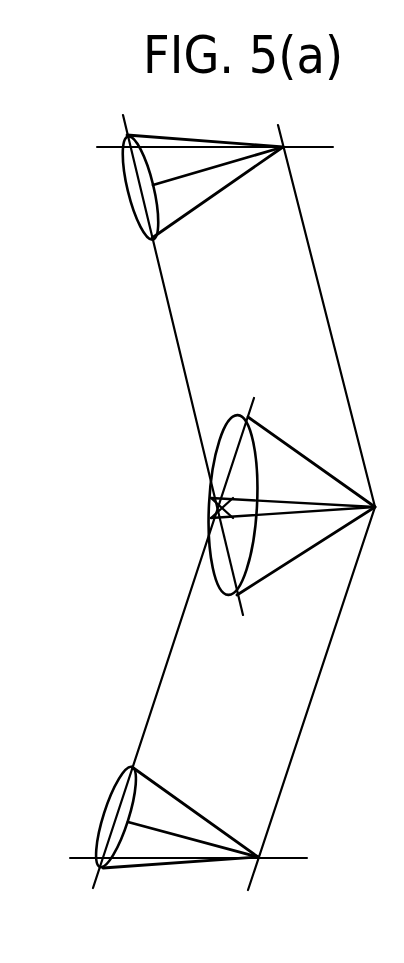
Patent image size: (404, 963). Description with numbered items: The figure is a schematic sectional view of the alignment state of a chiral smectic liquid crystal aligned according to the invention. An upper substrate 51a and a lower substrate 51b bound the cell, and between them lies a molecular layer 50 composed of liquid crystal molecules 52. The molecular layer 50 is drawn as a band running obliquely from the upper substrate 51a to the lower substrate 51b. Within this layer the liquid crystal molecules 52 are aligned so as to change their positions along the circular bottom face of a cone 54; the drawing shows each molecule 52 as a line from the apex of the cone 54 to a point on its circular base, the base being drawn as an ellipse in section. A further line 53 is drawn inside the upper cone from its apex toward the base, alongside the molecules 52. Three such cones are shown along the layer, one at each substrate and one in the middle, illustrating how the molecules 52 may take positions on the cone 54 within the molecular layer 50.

The molecular layer 50 is at (307, 225).
The upper substrate 51a is at (310, 147).
The lower substrate 51b is at (283, 857).
The liquid crystal molecules 52 is at (197, 173).
The central ray 53 is at (243, 180).
The cone 54 is at (132, 218).